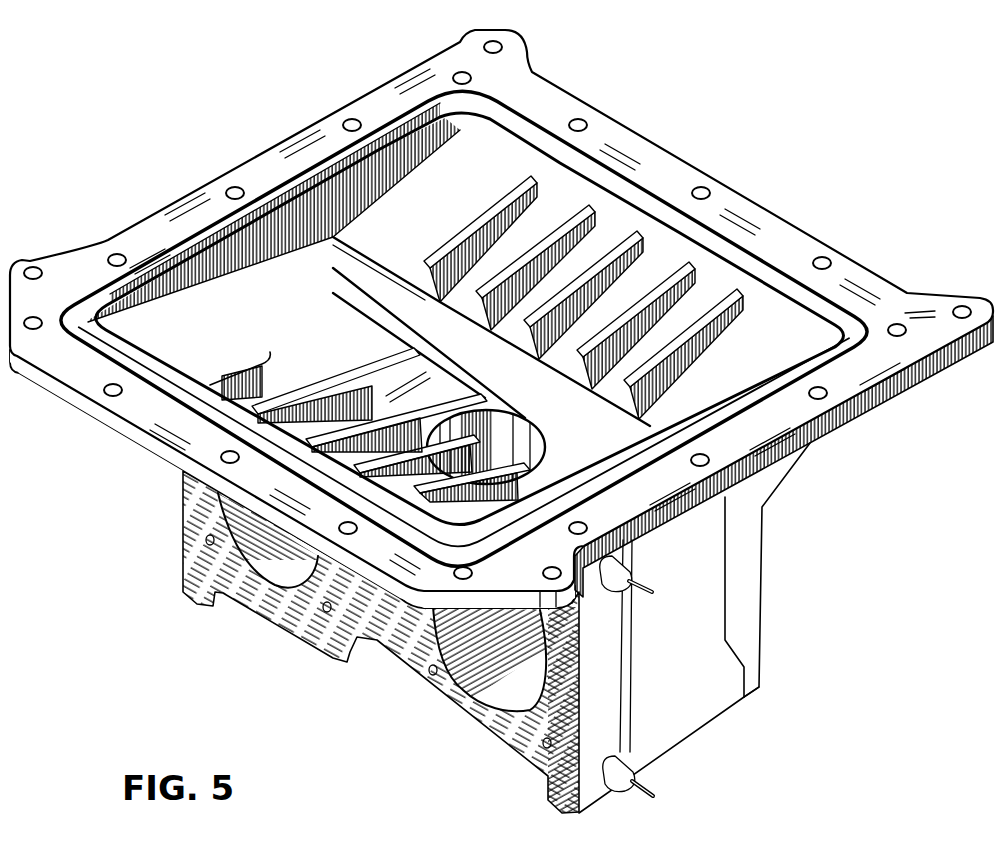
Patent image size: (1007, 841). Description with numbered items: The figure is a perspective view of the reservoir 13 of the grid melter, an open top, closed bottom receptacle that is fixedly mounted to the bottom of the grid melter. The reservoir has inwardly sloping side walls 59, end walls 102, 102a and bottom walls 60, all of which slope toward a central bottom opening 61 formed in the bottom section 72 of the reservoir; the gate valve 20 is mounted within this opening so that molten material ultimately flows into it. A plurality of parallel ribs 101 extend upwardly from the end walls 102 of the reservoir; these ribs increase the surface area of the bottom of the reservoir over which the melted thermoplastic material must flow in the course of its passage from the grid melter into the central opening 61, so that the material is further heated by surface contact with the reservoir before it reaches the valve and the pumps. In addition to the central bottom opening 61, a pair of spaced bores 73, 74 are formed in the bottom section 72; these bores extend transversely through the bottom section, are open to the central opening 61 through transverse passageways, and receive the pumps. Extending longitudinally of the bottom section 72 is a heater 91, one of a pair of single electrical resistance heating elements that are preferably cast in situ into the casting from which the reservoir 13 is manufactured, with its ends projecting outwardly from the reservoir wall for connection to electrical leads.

The reservoir 13 is at (208, 707).
The gate valve 20 is at (526, 418).
The side walls 59 is at (343, 201).
The bottom walls 60 is at (372, 358).
The central bottom opening 61 is at (530, 442).
The bottom section 72 is at (176, 567).
The bore 73 is at (495, 708).
The bore 74 is at (288, 572).
The heater 91 is at (656, 772).
The parallel ribs 101 is at (519, 252).
The end wall 102 is at (642, 294).
The end wall 102a is at (482, 375).